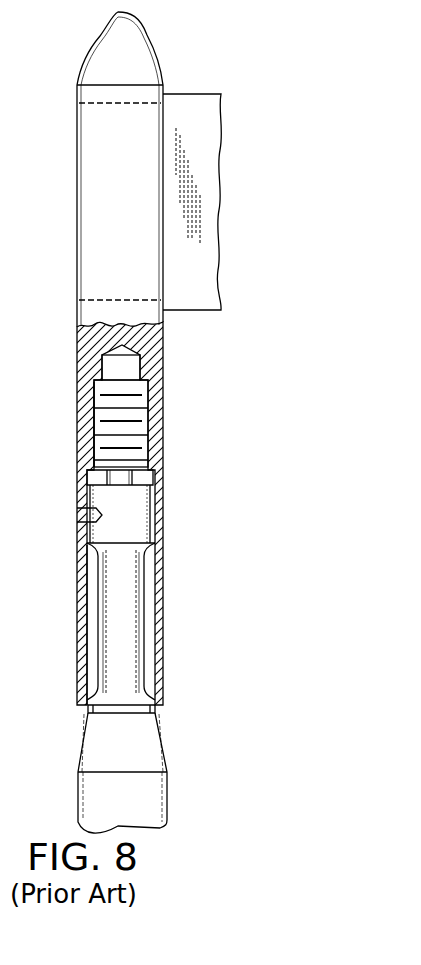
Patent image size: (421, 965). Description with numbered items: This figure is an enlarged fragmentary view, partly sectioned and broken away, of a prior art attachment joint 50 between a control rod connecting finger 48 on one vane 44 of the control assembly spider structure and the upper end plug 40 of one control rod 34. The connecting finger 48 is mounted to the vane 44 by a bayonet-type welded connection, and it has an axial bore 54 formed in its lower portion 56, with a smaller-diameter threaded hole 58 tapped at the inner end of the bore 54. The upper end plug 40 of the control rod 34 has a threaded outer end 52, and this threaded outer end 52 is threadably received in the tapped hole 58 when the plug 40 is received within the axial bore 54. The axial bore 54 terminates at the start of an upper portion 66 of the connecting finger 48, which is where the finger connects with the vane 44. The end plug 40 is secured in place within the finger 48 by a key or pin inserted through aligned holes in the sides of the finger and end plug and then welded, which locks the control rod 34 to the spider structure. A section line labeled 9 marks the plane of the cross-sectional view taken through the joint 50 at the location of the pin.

The control rod 34 is at (173, 793).
The upper end plug 40 is at (144, 607).
The vane 44 is at (196, 94).
The control rod connecting finger 48 is at (170, 643).
The attachment joint 50 is at (75, 583).
The threaded outer end 52 is at (95, 432).
The axial bore 54 is at (86, 655).
The lower portion 56 is at (76, 622).
The threaded hole 58 is at (138, 420).
The upper portion 66 is at (77, 217).
The section line 9- 9 is at (70, 517).